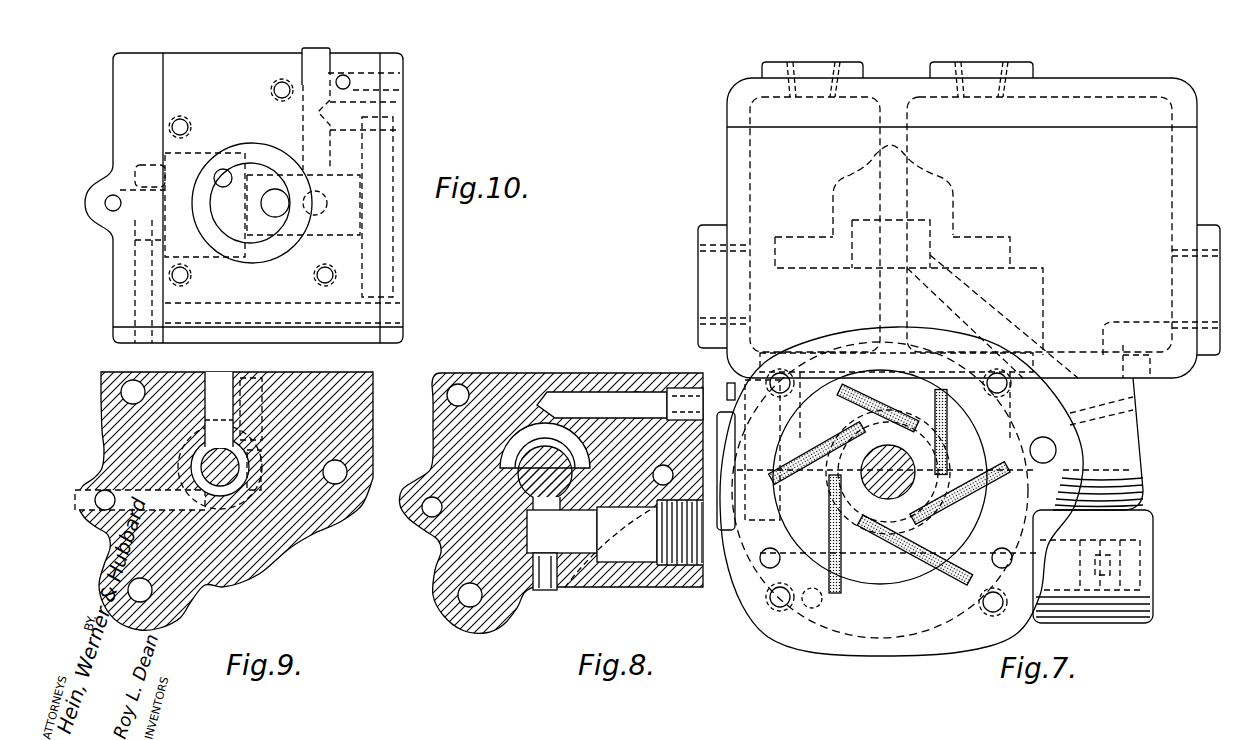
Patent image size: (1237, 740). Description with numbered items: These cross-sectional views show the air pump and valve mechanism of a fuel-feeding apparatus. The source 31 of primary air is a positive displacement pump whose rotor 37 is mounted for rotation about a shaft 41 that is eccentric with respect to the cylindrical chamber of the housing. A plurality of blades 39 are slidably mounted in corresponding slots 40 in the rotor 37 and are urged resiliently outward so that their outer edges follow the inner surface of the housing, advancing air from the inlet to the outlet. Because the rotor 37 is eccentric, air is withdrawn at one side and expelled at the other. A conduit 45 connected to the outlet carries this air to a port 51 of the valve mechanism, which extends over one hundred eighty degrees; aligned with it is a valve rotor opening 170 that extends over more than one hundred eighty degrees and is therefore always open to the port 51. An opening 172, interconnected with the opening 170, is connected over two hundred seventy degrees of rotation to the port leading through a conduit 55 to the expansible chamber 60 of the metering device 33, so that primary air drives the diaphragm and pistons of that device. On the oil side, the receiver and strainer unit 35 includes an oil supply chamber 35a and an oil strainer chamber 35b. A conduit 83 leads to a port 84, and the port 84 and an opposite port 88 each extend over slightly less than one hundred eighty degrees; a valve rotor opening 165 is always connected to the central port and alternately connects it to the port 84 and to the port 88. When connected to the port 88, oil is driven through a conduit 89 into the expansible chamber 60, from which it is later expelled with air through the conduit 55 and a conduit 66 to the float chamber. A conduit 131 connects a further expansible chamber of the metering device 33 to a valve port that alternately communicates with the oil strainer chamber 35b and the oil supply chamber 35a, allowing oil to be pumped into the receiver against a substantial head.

In FIG. 7, the source of primary air 31 is at (853, 656).
In FIG. 7, the metering device 33 is at (953, 206).
In FIG. 7, the receiver and strainer unit 35 is at (727, 148).
In FIG. 7, the oil supply chamber 35a is at (765, 199).
In FIG. 7, the oil strainer chamber 35b is at (1165, 160).
In FIG. 7, the rotor 37 is at (913, 585).
In FIG. 7, the blades 39 is at (948, 585).
In FIG. 7, the slots 40 is at (832, 487).
In FIG. 7, the shaft 41 is at (812, 514).
In FIG. 8, the conduit 45 is at (575, 402).
In FIG. 8, the port 51 is at (520, 440).
In FIG. 10, the conduit 55 is at (278, 210).
In FIG. 9, the conduit 55 is at (220, 392).
In FIG. 10, the expansible chamber 60 is at (260, 170).
In FIG. 8, the conduit 66 is at (615, 543).
In FIG. 10, the conduit 83 is at (133, 282).
In FIG. 9, the conduit 83 is at (100, 522).
In FIG. 9, the port 84 is at (185, 479).
In FIG. 9, the port 88 is at (260, 478).
In FIG. 10, the conduit 89 is at (224, 170).
In FIG. 9, the conduit 89 is at (258, 418).
In FIG. 10, the conduit 131 is at (393, 115).
In FIG. 7, the conduit 131 is at (988, 332).
In FIG. 9, the valve rotor opening 165 is at (221, 409).
In FIG. 8, the valve rotor opening 170 is at (537, 450).
In FIG. 9, the opening 172 is at (200, 441).